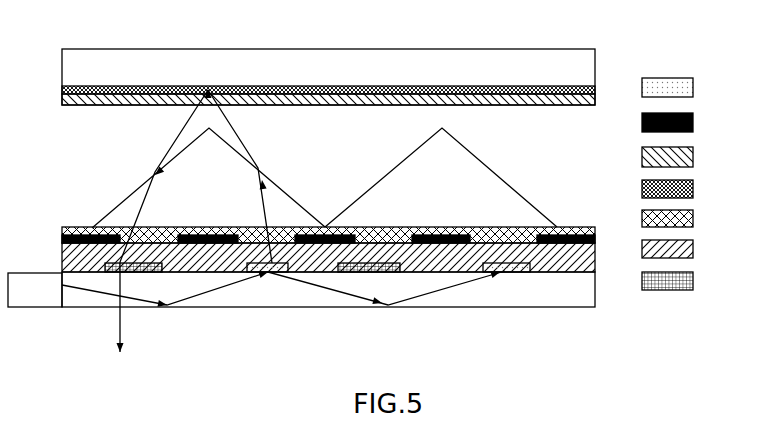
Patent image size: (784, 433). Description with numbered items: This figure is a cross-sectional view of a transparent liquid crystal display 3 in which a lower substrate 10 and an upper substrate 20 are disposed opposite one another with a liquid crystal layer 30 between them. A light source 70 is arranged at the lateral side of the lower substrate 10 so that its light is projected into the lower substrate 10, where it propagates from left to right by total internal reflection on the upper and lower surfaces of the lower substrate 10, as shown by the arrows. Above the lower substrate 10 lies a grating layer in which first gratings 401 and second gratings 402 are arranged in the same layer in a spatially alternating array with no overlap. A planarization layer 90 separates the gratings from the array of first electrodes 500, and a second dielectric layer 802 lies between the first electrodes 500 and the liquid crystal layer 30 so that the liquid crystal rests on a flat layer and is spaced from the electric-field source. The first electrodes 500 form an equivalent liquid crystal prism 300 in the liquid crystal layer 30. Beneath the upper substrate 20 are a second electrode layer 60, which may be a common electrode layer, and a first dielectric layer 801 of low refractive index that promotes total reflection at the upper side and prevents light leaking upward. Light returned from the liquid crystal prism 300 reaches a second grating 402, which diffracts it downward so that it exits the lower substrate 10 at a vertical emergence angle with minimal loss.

The transparent liquid crystal display 3 is at (375, 186).
The upper substrate 20 is at (328, 77).
The first dielectric layer 801 is at (402, 143).
The second electrode layer 60 is at (399, 131).
The second dielectric layer 802 is at (402, 226).
The first electrode 500 is at (402, 178).
The planarization layer 90 is at (399, 256).
The second grating 402 is at (423, 277).
The first grating 401 is at (494, 175).
The lower substrate 10 is at (328, 289).
The light source 70 is at (35, 290).
The liquid crystal prism 300 is at (208, 220).
The liquid crystal layer 30 is at (441, 175).